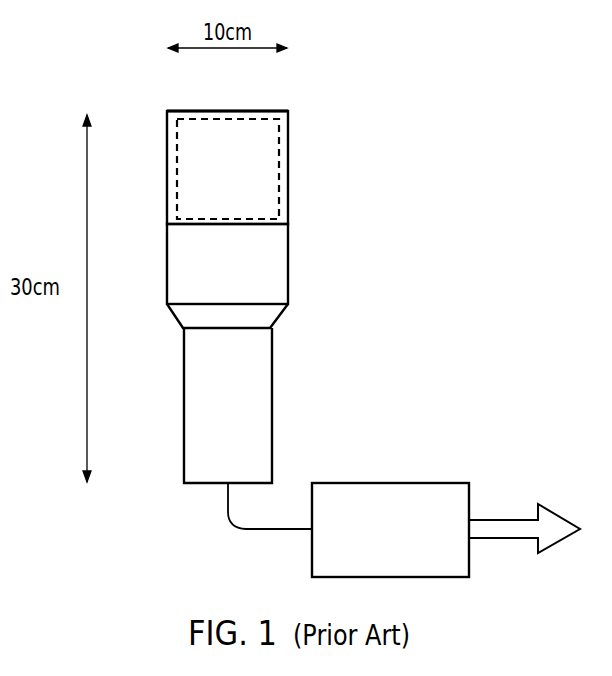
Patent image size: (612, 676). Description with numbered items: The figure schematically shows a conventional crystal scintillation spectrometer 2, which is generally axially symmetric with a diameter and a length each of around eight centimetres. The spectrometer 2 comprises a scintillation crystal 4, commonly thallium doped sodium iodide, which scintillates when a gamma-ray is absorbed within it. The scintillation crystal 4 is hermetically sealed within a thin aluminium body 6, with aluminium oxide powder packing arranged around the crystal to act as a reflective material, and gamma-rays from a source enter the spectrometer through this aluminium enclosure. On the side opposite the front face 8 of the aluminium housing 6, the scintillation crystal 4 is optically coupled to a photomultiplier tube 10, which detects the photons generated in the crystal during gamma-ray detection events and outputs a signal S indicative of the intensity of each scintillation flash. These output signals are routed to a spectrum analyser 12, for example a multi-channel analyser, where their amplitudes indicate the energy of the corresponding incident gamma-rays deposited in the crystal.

The crystal scintillation spectrometer 2 is at (488, 173).
The scintillation crystal 4 is at (190, 183).
The aluminium body 6 is at (290, 168).
The front face 8 is at (248, 111).
The photomultiplier tube 10 is at (273, 265).
The spectrum analyser 12 is at (389, 483).